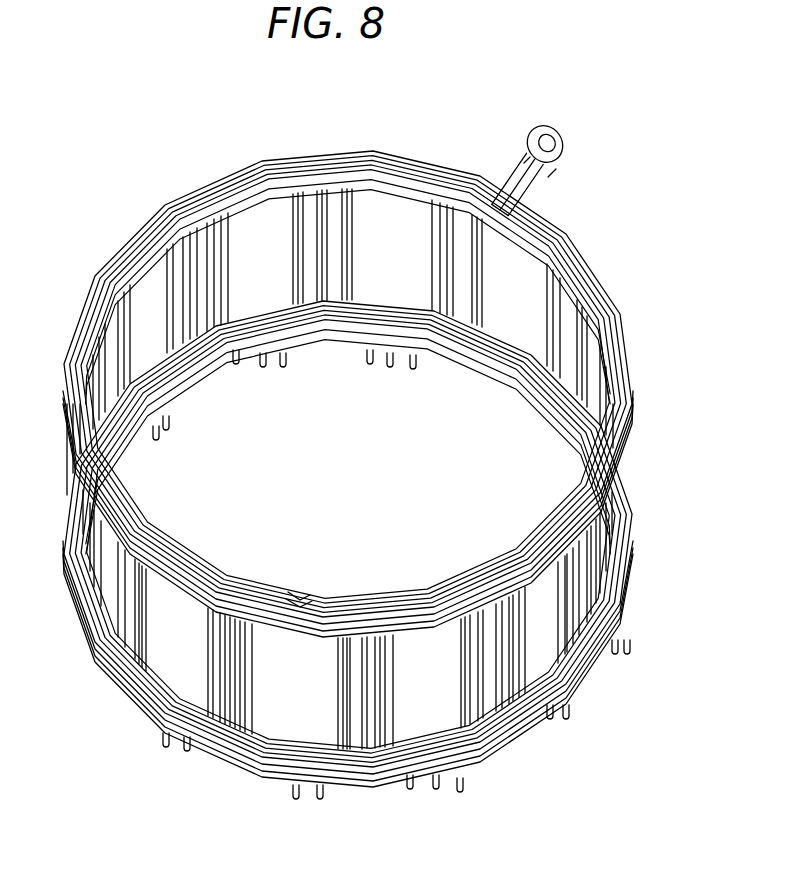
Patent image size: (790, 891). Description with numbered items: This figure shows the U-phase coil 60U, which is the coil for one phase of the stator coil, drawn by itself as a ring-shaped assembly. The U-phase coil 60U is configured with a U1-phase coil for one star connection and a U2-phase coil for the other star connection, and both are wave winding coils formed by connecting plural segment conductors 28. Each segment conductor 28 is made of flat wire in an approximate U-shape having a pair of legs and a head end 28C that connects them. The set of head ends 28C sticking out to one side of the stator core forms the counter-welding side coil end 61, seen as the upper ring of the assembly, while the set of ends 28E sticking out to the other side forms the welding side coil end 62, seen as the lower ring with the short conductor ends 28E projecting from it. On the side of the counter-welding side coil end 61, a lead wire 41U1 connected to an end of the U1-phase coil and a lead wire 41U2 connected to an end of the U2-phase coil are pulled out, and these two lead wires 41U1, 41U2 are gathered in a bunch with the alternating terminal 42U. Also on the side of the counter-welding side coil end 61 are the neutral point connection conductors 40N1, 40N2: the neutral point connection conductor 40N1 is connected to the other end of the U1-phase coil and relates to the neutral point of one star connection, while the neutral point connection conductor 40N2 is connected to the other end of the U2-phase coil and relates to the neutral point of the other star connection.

The U-phase coil 60U is at (127, 211).
The neutral point connection conductor 40N1 is at (350, 150).
The neutral point connection conductor 40N2 is at (620, 378).
The lead wire 41U1 is at (503, 188).
The lead wire 41U2 is at (524, 194).
The alternating terminal 42U is at (558, 133).
The counter-welding side coil end 61 is at (266, 580).
The welding side coil end 62 is at (151, 754).
The segment conductor 28 is at (393, 725).
The head end 28C is at (302, 597).
The end 28E is at (180, 750).